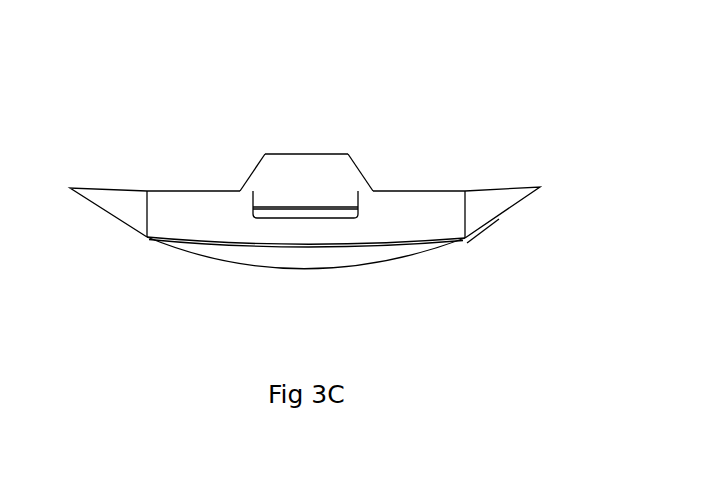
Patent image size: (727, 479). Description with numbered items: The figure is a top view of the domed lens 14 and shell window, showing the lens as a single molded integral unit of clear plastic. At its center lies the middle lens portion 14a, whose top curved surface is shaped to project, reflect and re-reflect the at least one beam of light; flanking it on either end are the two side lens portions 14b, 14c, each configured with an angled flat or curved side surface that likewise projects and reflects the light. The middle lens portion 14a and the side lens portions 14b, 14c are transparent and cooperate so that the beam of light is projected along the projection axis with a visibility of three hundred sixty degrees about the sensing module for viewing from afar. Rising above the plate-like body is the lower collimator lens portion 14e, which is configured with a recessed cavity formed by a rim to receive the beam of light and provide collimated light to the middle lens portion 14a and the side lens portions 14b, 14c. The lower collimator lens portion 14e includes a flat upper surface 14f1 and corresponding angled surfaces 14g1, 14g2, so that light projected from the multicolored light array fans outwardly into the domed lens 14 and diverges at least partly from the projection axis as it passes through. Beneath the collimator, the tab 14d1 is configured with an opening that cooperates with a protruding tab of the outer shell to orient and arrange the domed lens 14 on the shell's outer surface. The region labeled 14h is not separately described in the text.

The domed lens 14 is at (554, 74).
The middle lens portion 14a is at (258, 253).
The side lens portion 14b is at (502, 208).
The side lens portion 14c is at (102, 206).
The tab 14d1 is at (358, 202).
The lower collimator lens portion 14e is at (320, 146).
The flat upper surface 14f1 is at (278, 172).
The angled surface 14g1 is at (253, 172).
The angled surface 14g2 is at (358, 172).
The upper plate surface 14h is at (203, 210).